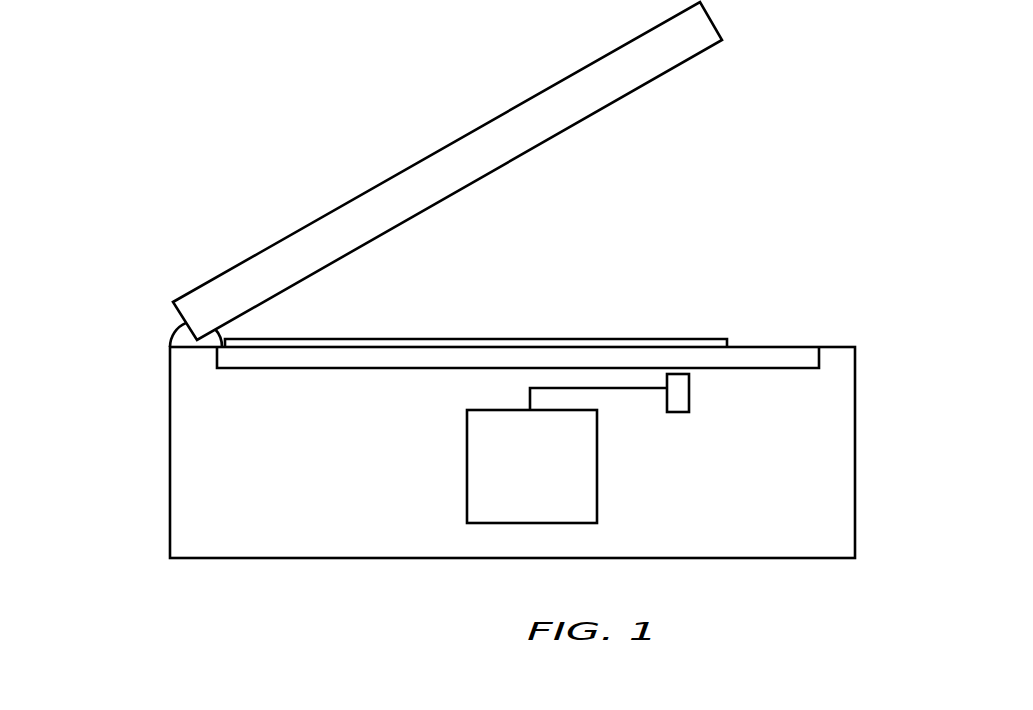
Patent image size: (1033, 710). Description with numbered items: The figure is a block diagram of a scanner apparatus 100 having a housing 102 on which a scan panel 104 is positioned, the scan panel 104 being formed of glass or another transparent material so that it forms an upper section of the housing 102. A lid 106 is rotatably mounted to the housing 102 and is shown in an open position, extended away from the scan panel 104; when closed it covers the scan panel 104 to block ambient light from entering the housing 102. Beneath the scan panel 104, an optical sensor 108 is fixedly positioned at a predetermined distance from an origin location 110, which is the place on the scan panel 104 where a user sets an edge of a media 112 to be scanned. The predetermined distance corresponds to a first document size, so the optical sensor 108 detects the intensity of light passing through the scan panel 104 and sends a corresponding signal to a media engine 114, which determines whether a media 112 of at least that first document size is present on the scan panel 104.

The scanner apparatus 100 is at (401, 66).
The housing 102 is at (170, 523).
The scan panel 104 is at (783, 346).
The lid 106 is at (330, 213).
The optical sensor 108 is at (689, 402).
The origin location 110 is at (217, 369).
The media 112 is at (548, 339).
The media engine 114 is at (551, 506).